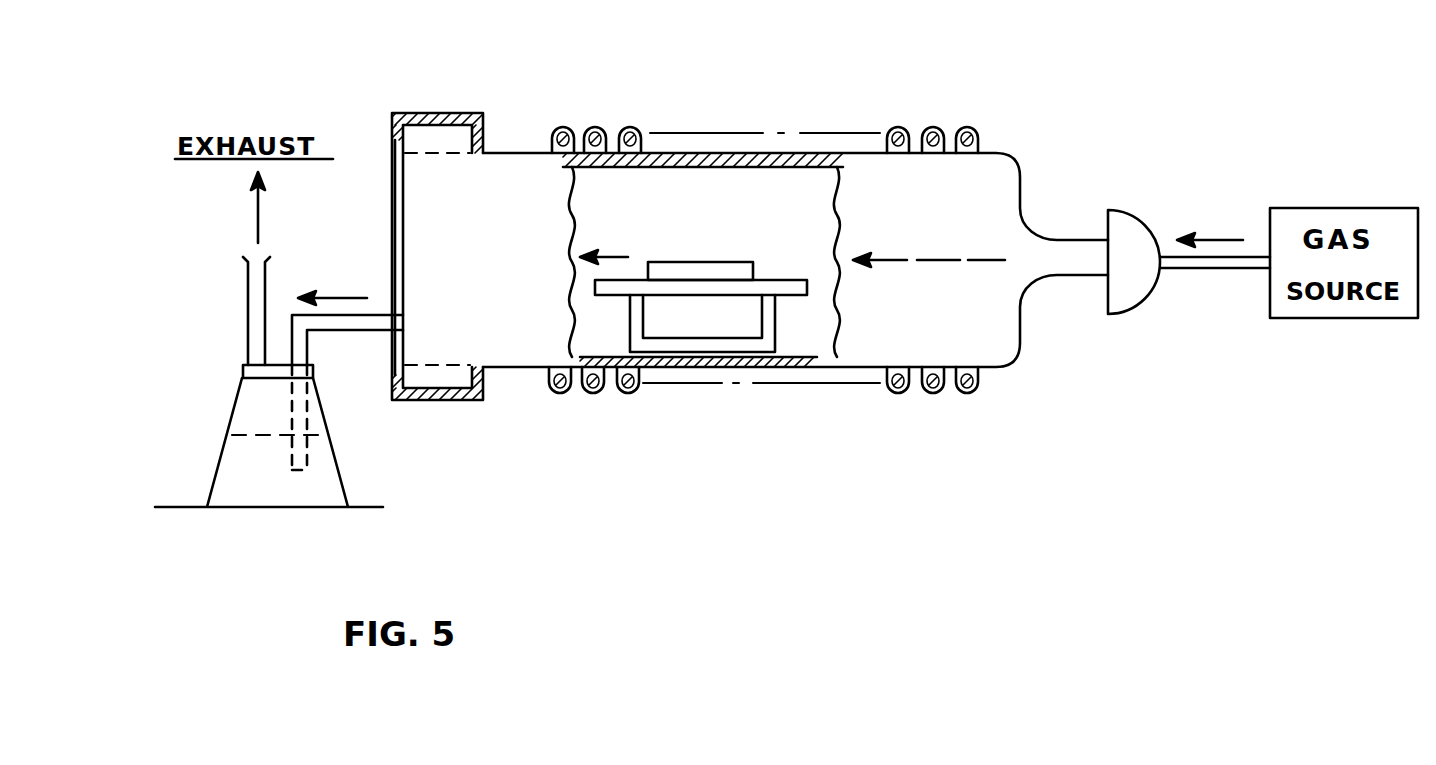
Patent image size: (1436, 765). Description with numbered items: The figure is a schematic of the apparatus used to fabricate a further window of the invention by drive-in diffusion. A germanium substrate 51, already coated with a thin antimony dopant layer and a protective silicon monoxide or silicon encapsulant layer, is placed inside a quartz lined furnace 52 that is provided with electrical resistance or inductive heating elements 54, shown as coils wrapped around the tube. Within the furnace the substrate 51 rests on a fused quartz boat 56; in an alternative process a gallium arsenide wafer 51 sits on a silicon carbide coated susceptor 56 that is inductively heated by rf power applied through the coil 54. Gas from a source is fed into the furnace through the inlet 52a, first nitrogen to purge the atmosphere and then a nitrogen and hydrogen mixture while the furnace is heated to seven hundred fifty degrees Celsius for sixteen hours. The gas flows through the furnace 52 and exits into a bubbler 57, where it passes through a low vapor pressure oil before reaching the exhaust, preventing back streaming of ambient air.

The substrate 51 is at (700, 262).
The quartz lined furnace 52 is at (765, 370).
The inlet 52a is at (1200, 272).
The heating elements 54 is at (898, 127).
The fused quartz boat 56 is at (630, 320).
The bubbler 57 is at (243, 468).